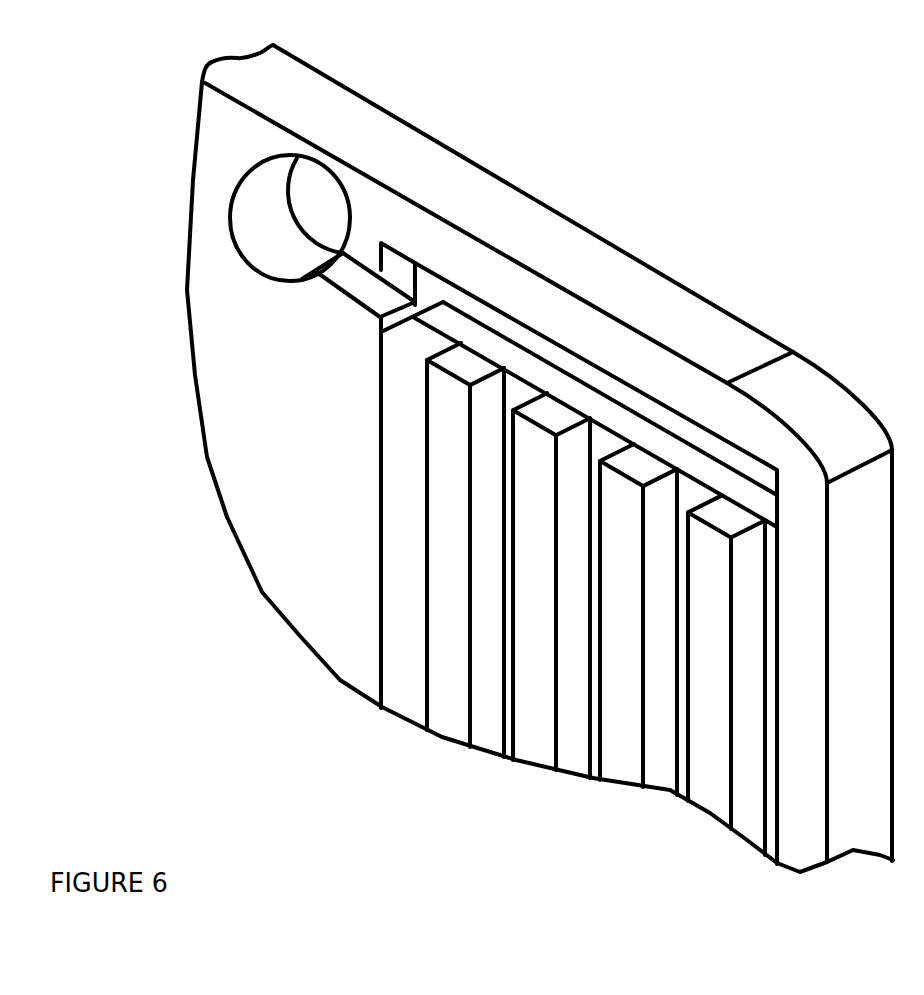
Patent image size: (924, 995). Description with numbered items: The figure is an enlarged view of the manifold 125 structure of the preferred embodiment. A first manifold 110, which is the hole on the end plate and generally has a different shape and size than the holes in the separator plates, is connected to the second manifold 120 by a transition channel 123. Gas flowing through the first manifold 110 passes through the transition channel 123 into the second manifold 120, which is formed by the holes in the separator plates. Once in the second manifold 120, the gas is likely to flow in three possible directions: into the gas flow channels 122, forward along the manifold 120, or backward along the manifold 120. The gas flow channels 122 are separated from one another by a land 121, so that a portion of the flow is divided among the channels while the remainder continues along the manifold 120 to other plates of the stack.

The first manifold 110 is at (196, 147).
The second manifold 120 is at (444, 563).
The land 121 is at (536, 586).
The gas flow channels 122 is at (595, 629).
The transition channel 123 is at (238, 337).
The manifold 125 is at (540, 458).